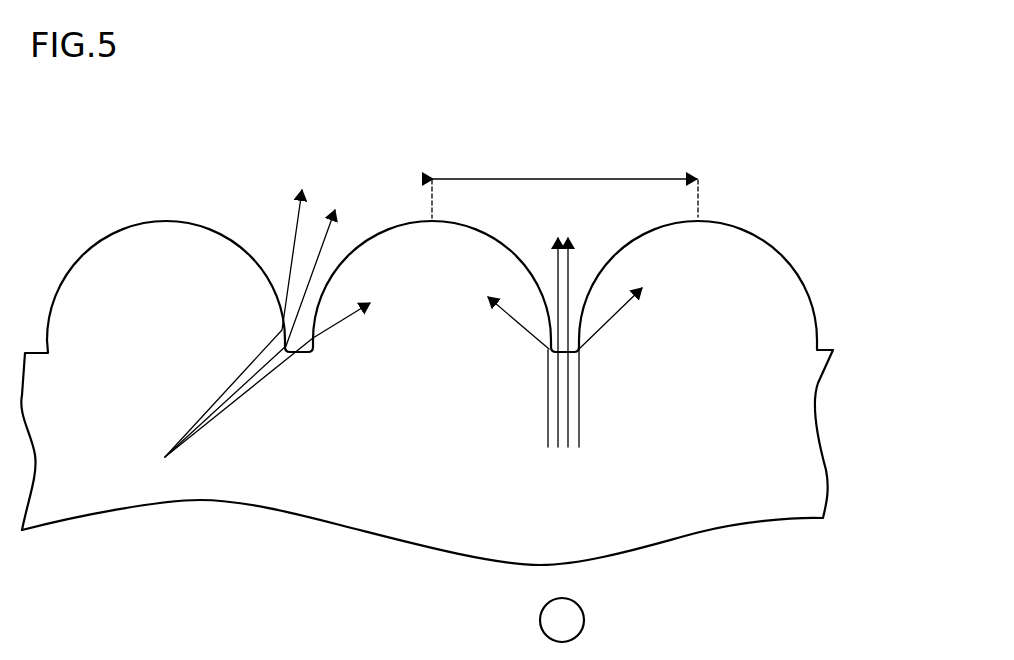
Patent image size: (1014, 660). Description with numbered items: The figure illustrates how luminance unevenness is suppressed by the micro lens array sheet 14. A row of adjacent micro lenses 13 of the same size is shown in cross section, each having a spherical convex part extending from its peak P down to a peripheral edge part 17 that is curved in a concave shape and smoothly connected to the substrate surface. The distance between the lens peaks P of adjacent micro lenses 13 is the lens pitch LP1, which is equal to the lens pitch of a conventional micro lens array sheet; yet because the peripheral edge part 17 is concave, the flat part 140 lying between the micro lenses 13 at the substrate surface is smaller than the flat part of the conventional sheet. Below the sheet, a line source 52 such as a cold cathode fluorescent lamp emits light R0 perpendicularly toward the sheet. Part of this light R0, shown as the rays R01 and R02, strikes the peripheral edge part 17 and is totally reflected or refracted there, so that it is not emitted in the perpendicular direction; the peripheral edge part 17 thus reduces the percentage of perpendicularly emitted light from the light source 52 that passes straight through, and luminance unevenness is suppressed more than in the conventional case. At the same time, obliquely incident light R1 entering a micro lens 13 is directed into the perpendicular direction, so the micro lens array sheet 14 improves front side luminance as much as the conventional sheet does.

The micro lens array sheet 14 is at (427, 328).
The micro lens 13 is at (494, 233).
The peripheral edge part 17 is at (545, 351).
The flat part 140 is at (566, 355).
The line source 52 is at (585, 613).
The peak P is at (431, 217).
The lens pitch LP1 is at (565, 165).
The light from a light source R0 is at (563, 361).
The light totally reflected or refracted by the peripheral edge part R01 is at (511, 306).
The light totally reflected or refracted by the peripheral edge part R02 is at (621, 302).
The obliquely incident light R1 is at (251, 334).